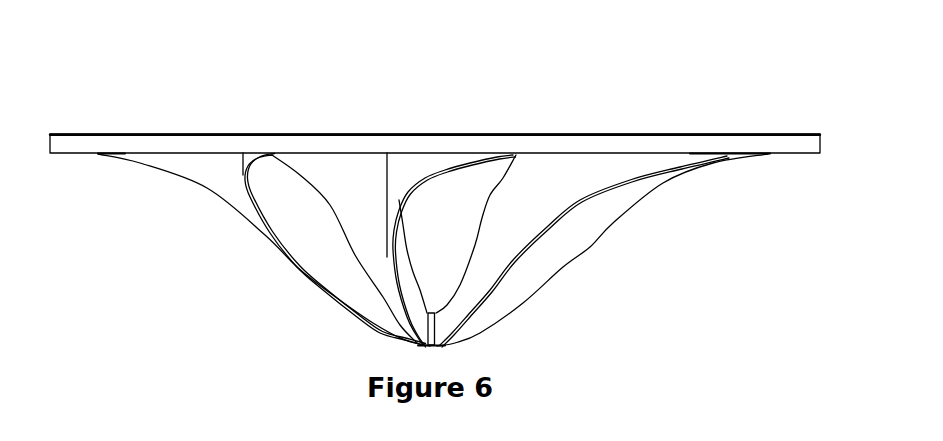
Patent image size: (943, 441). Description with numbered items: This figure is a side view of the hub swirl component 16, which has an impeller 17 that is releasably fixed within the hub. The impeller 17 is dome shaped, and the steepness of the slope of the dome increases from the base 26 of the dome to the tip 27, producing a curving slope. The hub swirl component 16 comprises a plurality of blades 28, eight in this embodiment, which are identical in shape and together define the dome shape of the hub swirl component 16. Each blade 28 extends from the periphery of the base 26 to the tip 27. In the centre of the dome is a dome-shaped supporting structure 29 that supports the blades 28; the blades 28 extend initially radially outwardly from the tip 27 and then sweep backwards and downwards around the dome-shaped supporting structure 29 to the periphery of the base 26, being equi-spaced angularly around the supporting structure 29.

The hub swirl component 16 is at (435, 77).
The impeller 17 is at (562, 147).
The base 26 is at (290, 140).
The tip 27 is at (435, 345).
The blades 28 is at (570, 242).
The dome-shaped supporting structure 29 is at (353, 185).